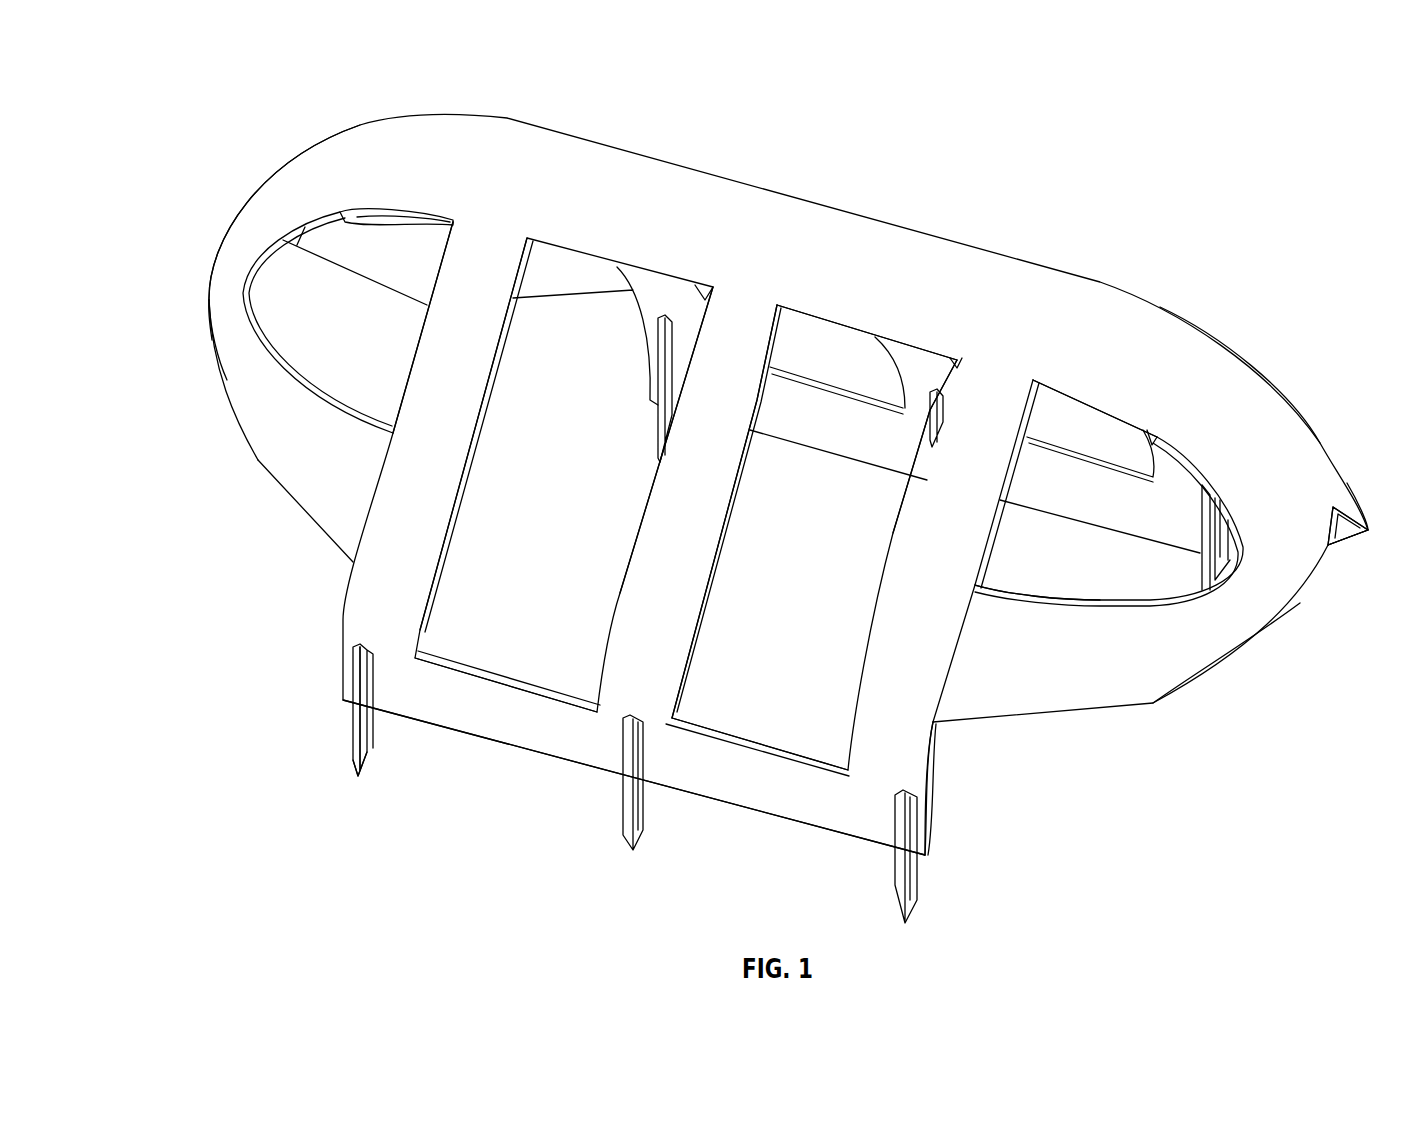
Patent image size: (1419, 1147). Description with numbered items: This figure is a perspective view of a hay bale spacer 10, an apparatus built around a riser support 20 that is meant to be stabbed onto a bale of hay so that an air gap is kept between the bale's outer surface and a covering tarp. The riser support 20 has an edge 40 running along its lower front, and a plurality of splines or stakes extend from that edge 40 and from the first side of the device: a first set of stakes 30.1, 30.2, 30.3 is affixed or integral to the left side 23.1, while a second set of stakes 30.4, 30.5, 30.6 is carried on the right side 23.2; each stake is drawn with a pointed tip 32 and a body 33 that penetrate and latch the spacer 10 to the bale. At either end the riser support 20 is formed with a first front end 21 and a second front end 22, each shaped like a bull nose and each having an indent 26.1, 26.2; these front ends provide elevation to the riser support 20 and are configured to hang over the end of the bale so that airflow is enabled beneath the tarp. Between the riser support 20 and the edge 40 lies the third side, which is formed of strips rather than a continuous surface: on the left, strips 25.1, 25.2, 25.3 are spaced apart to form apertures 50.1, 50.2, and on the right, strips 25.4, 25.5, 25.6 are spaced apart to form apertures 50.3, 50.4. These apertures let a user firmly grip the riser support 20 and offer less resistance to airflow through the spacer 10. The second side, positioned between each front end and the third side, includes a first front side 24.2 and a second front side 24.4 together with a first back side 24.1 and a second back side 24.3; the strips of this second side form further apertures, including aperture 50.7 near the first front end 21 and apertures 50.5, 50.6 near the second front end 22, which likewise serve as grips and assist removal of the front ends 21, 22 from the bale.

The hay bale spacer 10 is at (1135, 138).
The riser support 20 is at (788, 480).
The first front end 21 is at (1240, 345).
The second front end 22 is at (289, 186).
The left side 23.1 is at (564, 528).
The right side 23.2 is at (814, 540).
The first back side 24.1 is at (270, 372).
The first front side 24.2 is at (1109, 603).
The second back side 24.3 is at (350, 277).
The second front side 24.4 is at (1335, 424).
The strip 25.1 is at (495, 426).
The strip 25.2 is at (729, 502).
The strip 25.3 is at (990, 627).
The strip 25.4 is at (589, 336).
The strip 25.5 is at (838, 433).
The strip 25.6 is at (1100, 491).
The indent 26.1 is at (210, 241).
The indent 26.2 is at (1331, 570).
The stake 30.1 is at (259, 728).
The stake 30.2 is at (539, 798).
The stake 30.3 is at (808, 860).
The stake 30.4 is at (587, 388).
The stake 30.5 is at (850, 483).
The stake 30.6 is at (1145, 537).
The spike tip 32 is at (299, 812).
The spike body 33 is at (251, 708).
The edge 40 is at (834, 742).
The aperture 50.1 is at (410, 798).
The aperture 50.2 is at (670, 837).
The aperture 50.3 is at (895, 261).
The aperture 50.4 is at (1144, 311).
The aperture 50.5 is at (239, 446).
The aperture 50.6 is at (478, 147).
The aperture 50.7 is at (1126, 678).